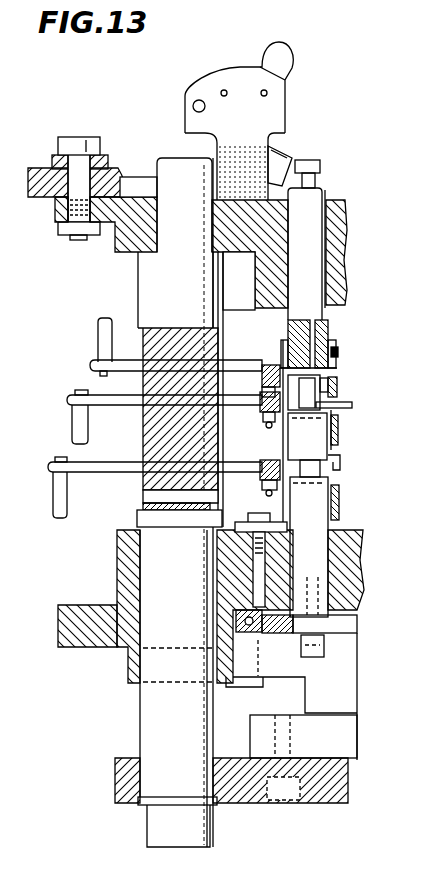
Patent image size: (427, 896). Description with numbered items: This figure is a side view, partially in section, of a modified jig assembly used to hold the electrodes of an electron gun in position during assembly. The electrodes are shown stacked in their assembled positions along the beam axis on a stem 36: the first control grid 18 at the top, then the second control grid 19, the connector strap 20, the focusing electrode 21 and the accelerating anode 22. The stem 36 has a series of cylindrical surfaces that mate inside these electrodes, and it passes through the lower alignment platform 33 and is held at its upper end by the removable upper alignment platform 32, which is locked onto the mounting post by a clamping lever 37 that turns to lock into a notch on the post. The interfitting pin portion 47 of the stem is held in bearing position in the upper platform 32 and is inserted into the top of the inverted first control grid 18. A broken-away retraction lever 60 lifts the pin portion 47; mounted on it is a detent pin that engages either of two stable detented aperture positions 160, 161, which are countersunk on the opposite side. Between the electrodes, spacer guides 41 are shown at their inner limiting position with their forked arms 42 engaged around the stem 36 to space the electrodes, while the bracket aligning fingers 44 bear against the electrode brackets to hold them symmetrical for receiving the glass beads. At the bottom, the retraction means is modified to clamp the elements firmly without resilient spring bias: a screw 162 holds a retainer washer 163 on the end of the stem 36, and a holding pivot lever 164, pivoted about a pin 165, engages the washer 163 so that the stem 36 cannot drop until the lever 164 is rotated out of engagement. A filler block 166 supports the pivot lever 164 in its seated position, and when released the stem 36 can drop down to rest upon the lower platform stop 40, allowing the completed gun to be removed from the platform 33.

The retraction lever 60 is at (283, 62).
The detented aperture position 160 is at (224, 88).
The detented aperture position 161 is at (268, 93).
The clamping lever 37 is at (28, 172).
The stem pin portion 47 is at (323, 192).
The upper alignment platform 32 is at (345, 256).
The spacer guide 41 is at (89, 363).
The bracket aligning finger 44 is at (262, 380).
The first control grid 18 is at (336, 343).
The nut 42 is at (326, 378).
The second control grid 19 is at (331, 392).
The connector strap 20 is at (345, 404).
The focusing electrode 21 is at (334, 461).
The accelerating anode 22 is at (336, 517).
The stem 36 is at (323, 572).
The lower alignment platform 33 is at (58, 630).
The retainer washer 163 is at (272, 628).
The screw 162 is at (325, 657).
The holding pivot lever 164 is at (318, 697).
The pivot pin 165 is at (245, 679).
The filler block 166 is at (348, 748).
The lower platform stop 40 is at (340, 787).